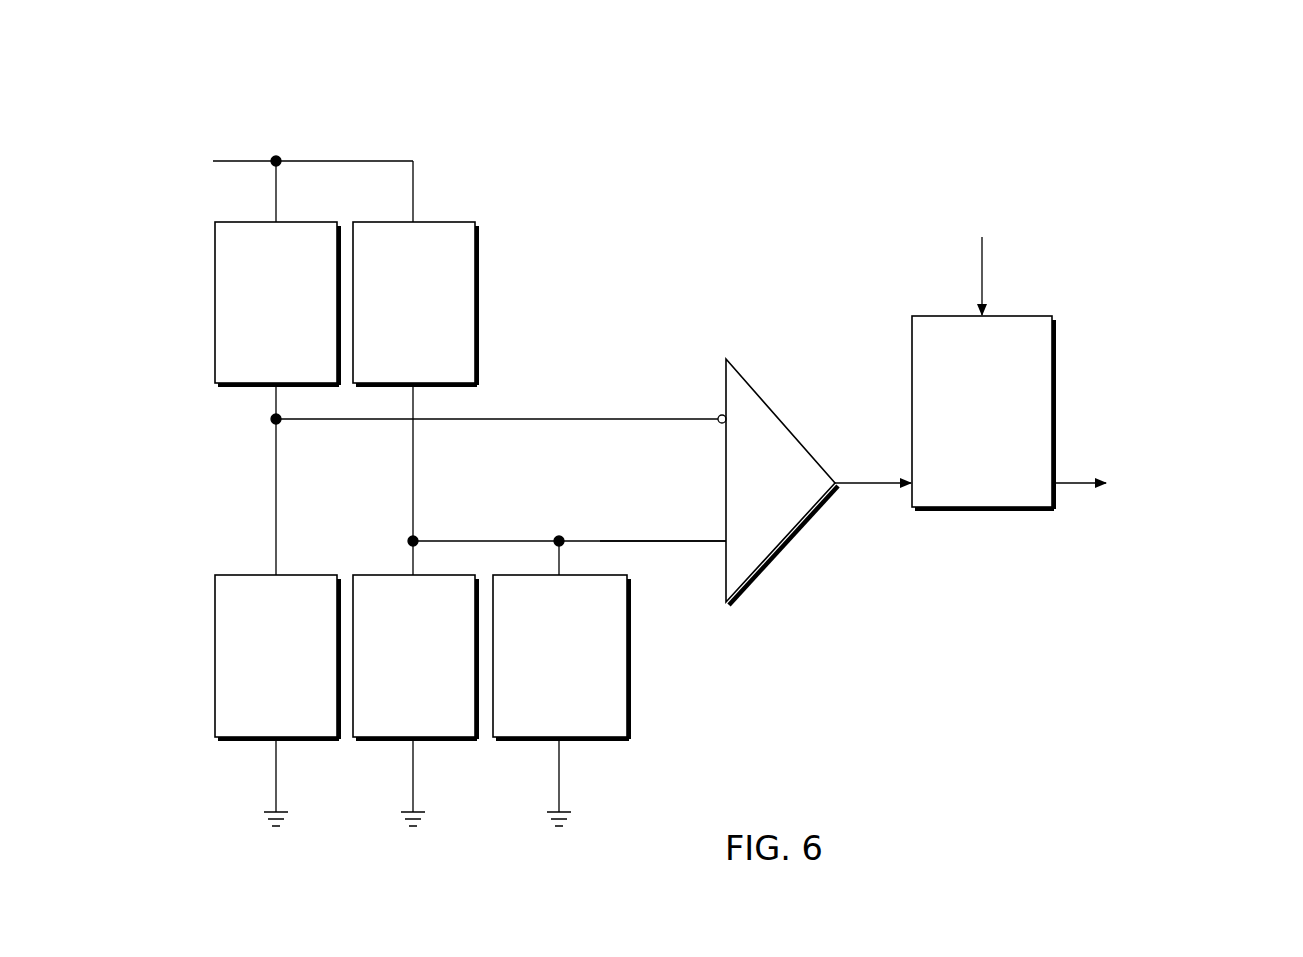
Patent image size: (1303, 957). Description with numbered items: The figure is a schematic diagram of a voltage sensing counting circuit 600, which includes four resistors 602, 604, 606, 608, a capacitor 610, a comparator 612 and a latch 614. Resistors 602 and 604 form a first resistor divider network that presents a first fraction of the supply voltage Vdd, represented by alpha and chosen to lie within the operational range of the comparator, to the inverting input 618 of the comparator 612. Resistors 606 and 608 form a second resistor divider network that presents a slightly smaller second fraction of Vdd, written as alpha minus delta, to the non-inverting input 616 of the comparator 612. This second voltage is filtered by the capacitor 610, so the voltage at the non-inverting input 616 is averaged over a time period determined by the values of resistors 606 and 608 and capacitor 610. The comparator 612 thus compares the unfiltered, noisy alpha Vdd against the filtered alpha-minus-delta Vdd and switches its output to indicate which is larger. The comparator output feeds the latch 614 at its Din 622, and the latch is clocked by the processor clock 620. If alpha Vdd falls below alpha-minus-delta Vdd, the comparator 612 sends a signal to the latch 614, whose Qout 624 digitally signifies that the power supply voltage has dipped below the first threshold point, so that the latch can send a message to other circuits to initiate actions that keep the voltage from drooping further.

The counting circuit 600 is at (1158, 122).
The resistor 602 is at (215, 668).
The resistor 604 is at (215, 317).
The resistor 606 is at (385, 740).
The resistor 608 is at (478, 293).
The capacitor 610 is at (630, 695).
The comparator 612 is at (797, 433).
The latch 614 is at (998, 443).
The non-inverting input 616 is at (726, 556).
The inverting input 618 is at (718, 416).
The processor clock 620 is at (980, 234).
The Din 622 is at (907, 497).
The Qout 624 is at (1203, 450).